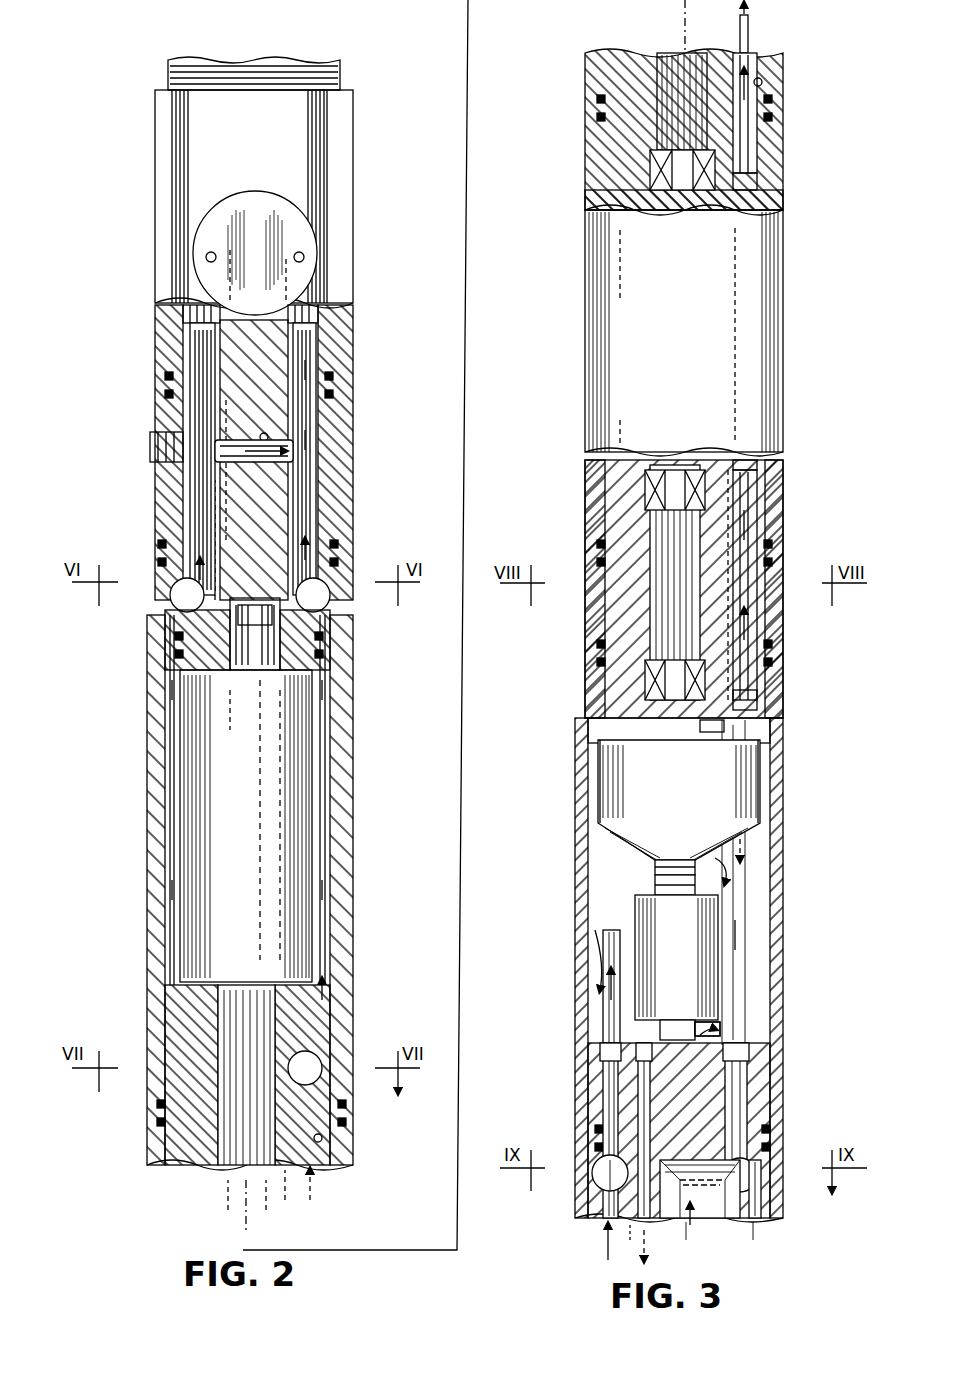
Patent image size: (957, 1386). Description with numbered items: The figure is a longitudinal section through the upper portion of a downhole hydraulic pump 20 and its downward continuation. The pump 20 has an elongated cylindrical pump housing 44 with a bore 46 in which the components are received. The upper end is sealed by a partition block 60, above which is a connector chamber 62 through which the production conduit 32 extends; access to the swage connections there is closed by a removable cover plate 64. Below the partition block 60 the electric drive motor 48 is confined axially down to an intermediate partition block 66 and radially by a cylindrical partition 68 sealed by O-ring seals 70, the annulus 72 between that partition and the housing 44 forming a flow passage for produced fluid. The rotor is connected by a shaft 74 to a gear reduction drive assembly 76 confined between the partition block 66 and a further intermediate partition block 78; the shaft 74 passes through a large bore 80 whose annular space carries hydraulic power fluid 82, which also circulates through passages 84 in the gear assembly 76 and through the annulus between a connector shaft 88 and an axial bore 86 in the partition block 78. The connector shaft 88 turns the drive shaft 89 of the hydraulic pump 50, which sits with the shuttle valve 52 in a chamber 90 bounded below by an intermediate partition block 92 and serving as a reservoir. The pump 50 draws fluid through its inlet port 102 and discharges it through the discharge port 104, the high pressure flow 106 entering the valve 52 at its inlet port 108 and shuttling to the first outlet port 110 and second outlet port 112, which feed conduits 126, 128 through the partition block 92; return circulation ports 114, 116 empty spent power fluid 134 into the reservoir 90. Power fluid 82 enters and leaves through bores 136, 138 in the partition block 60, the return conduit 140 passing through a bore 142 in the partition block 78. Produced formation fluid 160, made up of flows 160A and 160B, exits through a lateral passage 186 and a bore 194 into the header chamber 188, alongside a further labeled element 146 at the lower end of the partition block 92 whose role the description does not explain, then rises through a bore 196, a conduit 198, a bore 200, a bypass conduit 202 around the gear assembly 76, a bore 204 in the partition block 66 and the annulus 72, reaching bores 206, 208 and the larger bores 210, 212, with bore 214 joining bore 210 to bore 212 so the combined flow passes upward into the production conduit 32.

In FIG. 2, the pump 20 is at (138, 160).
In FIG. 2, the production conduit 32 is at (335, 316).
In FIG. 2, the pump housing 44 is at (350, 788).
In FIG. 3, the pump housing 44 is at (782, 790).
In FIG. 2, the bore 46 is at (165, 714).
In FIG. 2, the electrical drive motor 48 is at (246, 826).
In FIG. 3, the hydraulic pump 50 is at (679, 801).
In FIG. 3, the hydraulic shuttle valve 52 is at (676, 957).
In FIG. 2, the partition block 60 is at (254, 452).
In FIG. 2, the cylindrical chamber 62 is at (175, 319).
In FIG. 2, the removable cover plate 64 is at (262, 200).
In FIG. 2, the intermediate partition block 66 is at (165, 1150).
In FIG. 3, the intermediate partition block 66 is at (592, 66).
In FIG. 2, the cylindrical partition 68 is at (322, 842).
In FIG. 2, the O-ring seals 70 is at (322, 637).
In FIG. 3, the O-ring seals 70 is at (598, 118).
In FIG. 2, the annulus 72 is at (330, 812).
In FIG. 2, the shaft 74 is at (245, 1170).
In FIG. 3, the shaft 74 is at (680, 50).
In FIG. 3, the gear reduction drive assembly 76 is at (684, 333).
In FIG. 3, the intermediate partition block 78 is at (588, 600).
In FIG. 2, the bore 80 is at (210, 1165).
In FIG. 3, the bore 80 is at (650, 143).
In FIG. 2, the hydraulic power fluid 82 is at (230, 250).
In FIG. 3, the hydraulic power fluid 82 is at (620, 260).
In FIG. 3, the fluid flow passages 84 is at (635, 210).
In FIG. 3, the axial bore 86 is at (700, 578).
In FIG. 3, the connector shaft 88 is at (665, 572).
In FIG. 3, the drive shaft 89 is at (700, 732).
In FIG. 3, the chamber 90 is at (616, 853).
In FIG. 3, the intermediate partition block 92 is at (679, 1130).
In FIG. 3, the inlet port 102 is at (600, 769).
In FIG. 3, the discharge port 104 is at (695, 845).
In FIG. 3, the high pressure hydraulic flow 106 is at (650, 1070).
In FIG. 3, the high pressure inlet port 108 is at (674, 899).
In FIG. 3, the first outlet port 110 is at (610, 940).
In FIG. 3, the second outlet port 112 is at (676, 1015).
In FIG. 3, the first return circulation port 114 is at (700, 1032).
In FIG. 3, the second return circulation port 116 is at (707, 1029).
In FIG. 3, the conduit 126 is at (650, 1235).
In FIG. 3, the conduit 128 is at (606, 1076).
In FIG. 3, the spent power fluid 134 is at (592, 1188).
In FIG. 2, the bore 136 is at (228, 475).
In FIG. 2, the bore 138 is at (285, 560).
In FIG. 2, the tubular conduit 140 is at (280, 679).
In FIG. 3, the tubular conduit 140 is at (722, 858).
In FIG. 3, the bore 142 is at (755, 690).
In FIG. 3, the passage 146 is at (685, 1230).
In FIG. 2, the formation fluid 160 is at (310, 378).
In FIG. 3, the formation fluid 160 is at (748, 45).
In FIG. 3, the formation fluid 160A is at (686, 1240).
In FIG. 3, the formation fluid 160B is at (753, 1240).
In FIG. 3, the passage 186 is at (680, 1185).
In FIG. 3, the chamber 188 is at (748, 1162).
In FIG. 3, the bore 194 is at (752, 1222).
In FIG. 3, the bore 196 is at (765, 1078).
In FIG. 3, the conduit 198 is at (760, 886).
In FIG. 3, the bore 200 is at (762, 618).
In FIG. 3, the conduit 202 is at (775, 195).
In FIG. 2, the bore 204 is at (320, 1140).
In FIG. 3, the bore 204 is at (762, 82).
In FIG. 2, the bore 206 is at (175, 621).
In FIG. 2, the bore 208 is at (325, 623).
In FIG. 2, the bore 210 is at (200, 549).
In FIG. 2, the bore 212 is at (322, 454).
In FIG. 2, the bore 214 is at (264, 435).